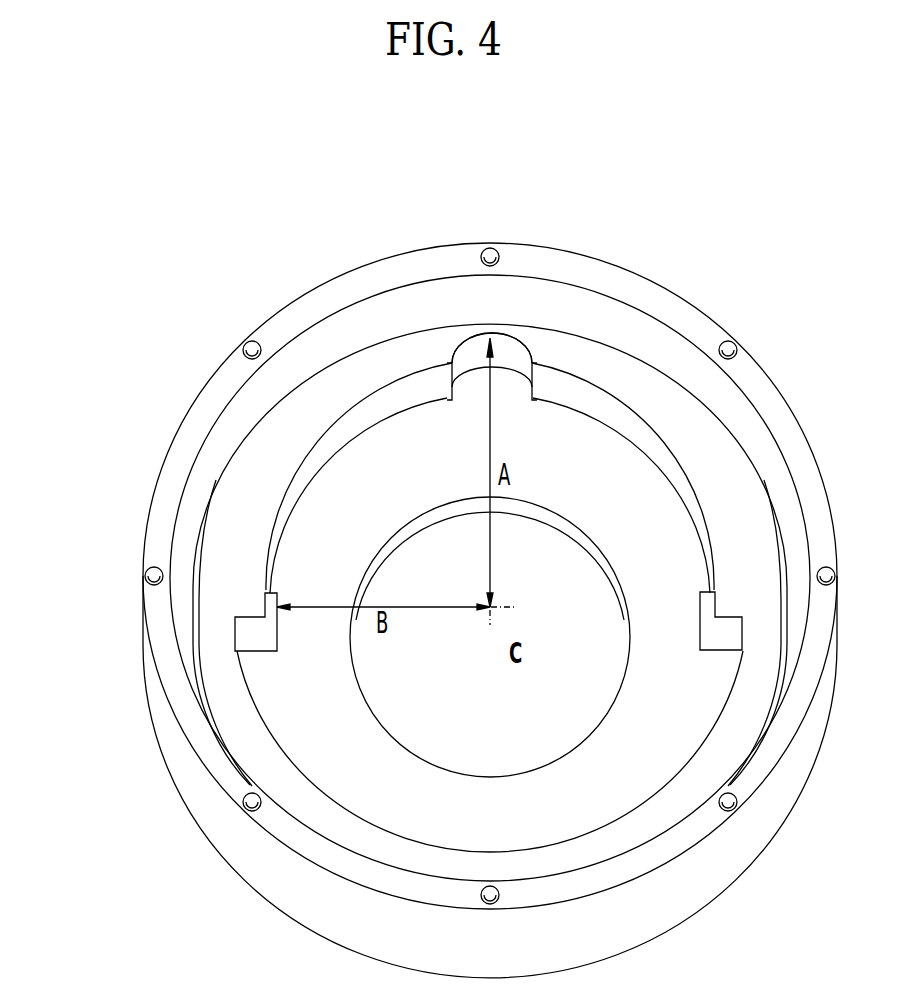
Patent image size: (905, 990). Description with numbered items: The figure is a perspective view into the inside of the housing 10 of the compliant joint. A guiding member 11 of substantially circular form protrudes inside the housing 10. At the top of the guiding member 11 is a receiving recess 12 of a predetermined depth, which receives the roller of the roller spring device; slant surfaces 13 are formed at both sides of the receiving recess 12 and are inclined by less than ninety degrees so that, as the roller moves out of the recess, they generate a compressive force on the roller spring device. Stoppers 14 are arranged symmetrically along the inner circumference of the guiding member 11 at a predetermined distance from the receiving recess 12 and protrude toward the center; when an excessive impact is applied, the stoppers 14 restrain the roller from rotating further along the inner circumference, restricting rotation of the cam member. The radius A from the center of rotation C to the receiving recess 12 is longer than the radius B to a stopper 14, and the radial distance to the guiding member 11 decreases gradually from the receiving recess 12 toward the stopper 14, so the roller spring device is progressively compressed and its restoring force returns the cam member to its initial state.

The housing 10 is at (297, 307).
The guiding member 11 is at (272, 457).
The receiving recess 12 is at (528, 320).
The slant surfaces 13 is at (468, 357).
The stoppers 14 is at (277, 619).